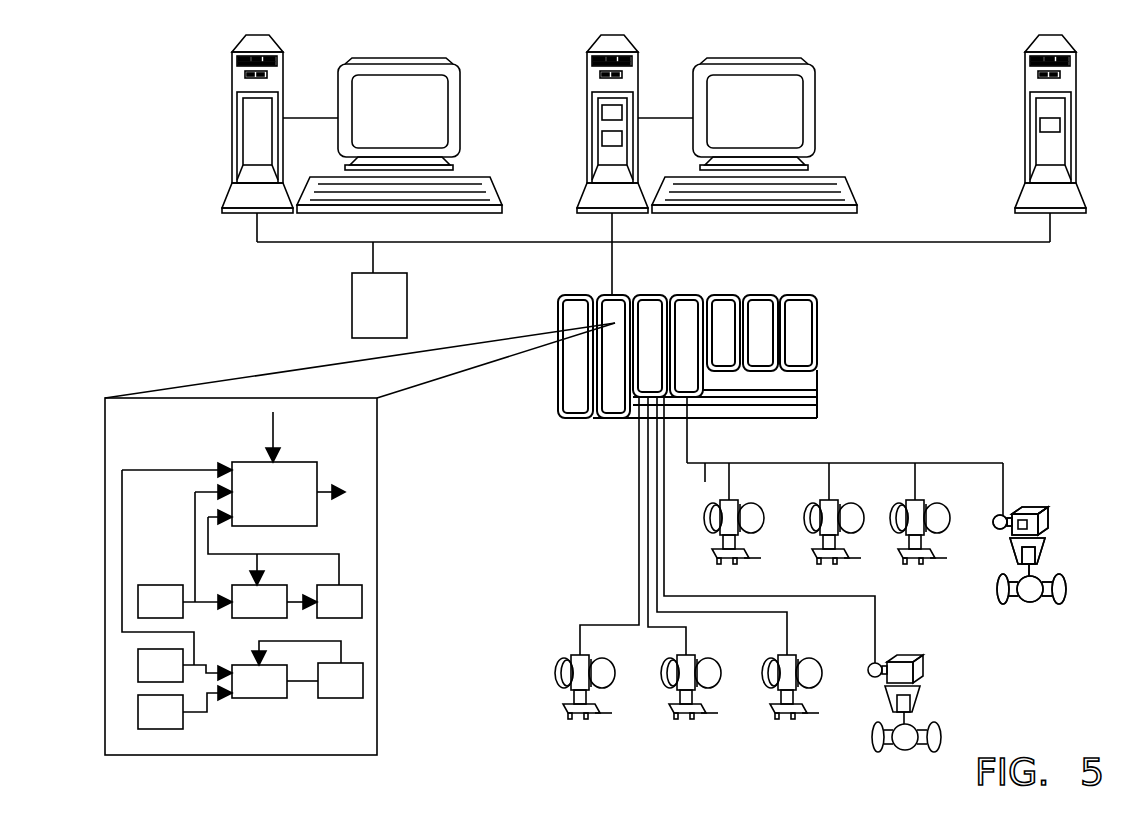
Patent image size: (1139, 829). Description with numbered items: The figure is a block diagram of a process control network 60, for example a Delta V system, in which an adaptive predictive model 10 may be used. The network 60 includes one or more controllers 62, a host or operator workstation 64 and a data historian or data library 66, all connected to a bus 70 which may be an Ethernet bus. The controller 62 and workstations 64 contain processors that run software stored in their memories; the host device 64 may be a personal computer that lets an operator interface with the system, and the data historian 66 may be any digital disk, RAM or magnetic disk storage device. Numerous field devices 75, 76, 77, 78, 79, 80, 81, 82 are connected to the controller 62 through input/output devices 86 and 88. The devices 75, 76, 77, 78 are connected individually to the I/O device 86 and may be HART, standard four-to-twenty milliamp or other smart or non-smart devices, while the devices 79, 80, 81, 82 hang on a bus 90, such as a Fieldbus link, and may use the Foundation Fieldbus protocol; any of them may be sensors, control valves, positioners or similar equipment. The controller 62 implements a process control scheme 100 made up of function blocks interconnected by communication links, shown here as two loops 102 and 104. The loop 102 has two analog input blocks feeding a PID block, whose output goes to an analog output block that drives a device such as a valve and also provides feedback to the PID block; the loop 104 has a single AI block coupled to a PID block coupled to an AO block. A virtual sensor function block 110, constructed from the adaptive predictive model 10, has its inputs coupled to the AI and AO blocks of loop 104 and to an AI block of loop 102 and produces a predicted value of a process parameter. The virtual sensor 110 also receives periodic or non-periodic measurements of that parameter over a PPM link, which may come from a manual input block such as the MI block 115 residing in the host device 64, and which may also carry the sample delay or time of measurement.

The process control network 60 is at (895, 70).
The host or operator workstation 64 is at (232, 62).
The adaptive predictive model 10 is at (600, 113).
The MI block 115 is at (600, 139).
The data historian 66 is at (352, 318).
The bus 70 is at (990, 245).
The controller 62 is at (617, 312).
The input/output device 86 is at (655, 296).
The input/output device 88 is at (700, 296).
The bus 90 is at (845, 451).
The field device 79 is at (745, 500).
The field device 80 is at (832, 500).
The field device 81 is at (920, 500).
The field device 82 is at (1032, 505).
The field device 75 is at (565, 700).
The field device 76 is at (673, 705).
The field device 77 is at (768, 705).
The field device 78 is at (887, 697).
The process control scheme 100 is at (277, 594).
The loop 102 is at (302, 742).
The loop 104 is at (388, 585).
The virtual sensor function block 110 is at (242, 461).